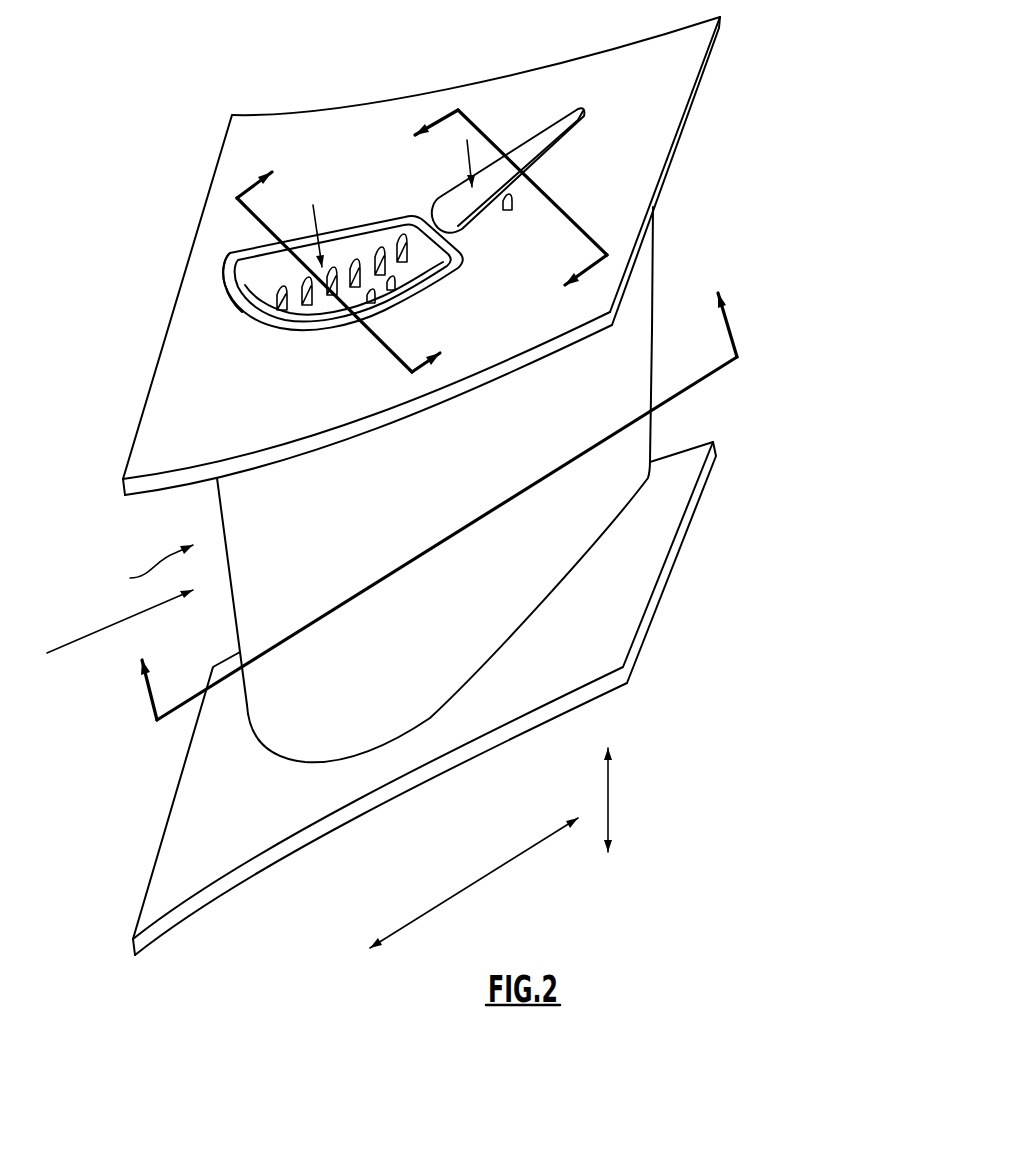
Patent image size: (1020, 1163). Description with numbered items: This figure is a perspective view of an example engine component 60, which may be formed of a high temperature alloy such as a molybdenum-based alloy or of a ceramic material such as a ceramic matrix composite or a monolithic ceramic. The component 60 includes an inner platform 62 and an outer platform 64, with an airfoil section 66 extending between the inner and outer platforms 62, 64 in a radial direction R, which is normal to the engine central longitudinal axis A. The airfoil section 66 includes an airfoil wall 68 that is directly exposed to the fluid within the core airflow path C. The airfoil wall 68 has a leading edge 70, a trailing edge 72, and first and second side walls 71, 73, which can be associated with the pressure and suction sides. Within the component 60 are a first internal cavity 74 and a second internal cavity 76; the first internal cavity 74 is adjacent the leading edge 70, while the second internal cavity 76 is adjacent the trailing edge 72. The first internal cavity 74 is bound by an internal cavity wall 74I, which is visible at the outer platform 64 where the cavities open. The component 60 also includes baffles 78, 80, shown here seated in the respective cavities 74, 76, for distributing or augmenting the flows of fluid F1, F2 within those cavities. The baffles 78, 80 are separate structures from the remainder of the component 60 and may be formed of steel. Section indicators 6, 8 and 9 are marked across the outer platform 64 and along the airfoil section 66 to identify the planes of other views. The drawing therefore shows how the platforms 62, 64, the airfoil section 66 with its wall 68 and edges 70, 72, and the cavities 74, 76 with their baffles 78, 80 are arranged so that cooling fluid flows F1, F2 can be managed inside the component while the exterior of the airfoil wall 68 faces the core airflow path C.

The engine component 60 is at (777, 467).
The inner platform 62 is at (607, 650).
The outer platform 64 is at (338, 158).
The airfoil section 66 is at (148, 568).
The airfoil wall 68 is at (555, 387).
The leading edge 70 is at (218, 505).
The first side wall 71 is at (655, 207).
The trailing edge 72 is at (655, 272).
The second side wall 73 is at (633, 392).
The first internal cavity 74 is at (346, 232).
The internal cavity wall 74I is at (233, 277).
The second internal cavity 76 is at (445, 190).
The baffle 78 is at (372, 247).
The baffle 80 is at (567, 137).
The flow of fluid F1 is at (313, 205).
The flow of fluid F2 is at (467, 140).
The engine central longitudinal axis A is at (477, 881).
The radial direction R is at (610, 808).
The core airflow path C is at (83, 638).
The section line 6- 6 is at (338, 260).
The section line 8- 8 is at (503, 207).
The section line 9- 9 is at (437, 506).